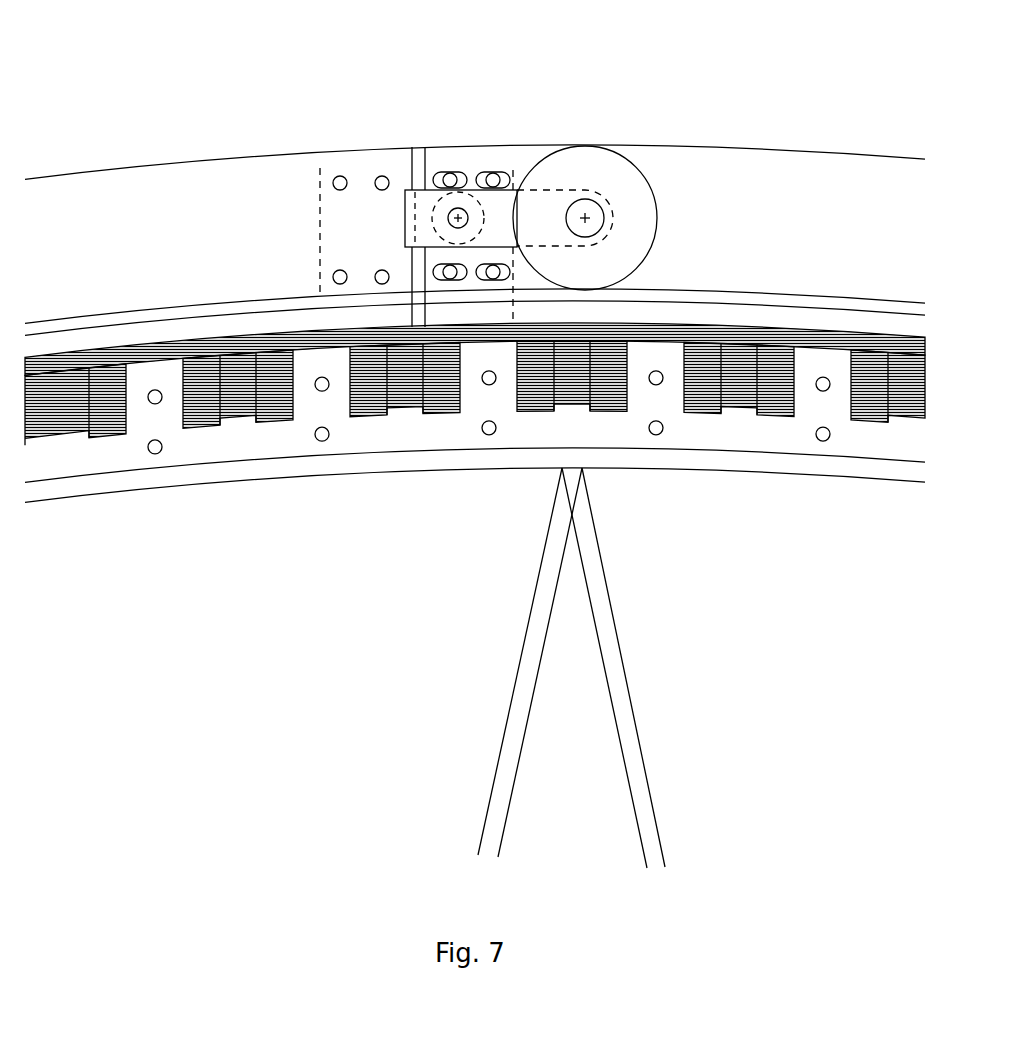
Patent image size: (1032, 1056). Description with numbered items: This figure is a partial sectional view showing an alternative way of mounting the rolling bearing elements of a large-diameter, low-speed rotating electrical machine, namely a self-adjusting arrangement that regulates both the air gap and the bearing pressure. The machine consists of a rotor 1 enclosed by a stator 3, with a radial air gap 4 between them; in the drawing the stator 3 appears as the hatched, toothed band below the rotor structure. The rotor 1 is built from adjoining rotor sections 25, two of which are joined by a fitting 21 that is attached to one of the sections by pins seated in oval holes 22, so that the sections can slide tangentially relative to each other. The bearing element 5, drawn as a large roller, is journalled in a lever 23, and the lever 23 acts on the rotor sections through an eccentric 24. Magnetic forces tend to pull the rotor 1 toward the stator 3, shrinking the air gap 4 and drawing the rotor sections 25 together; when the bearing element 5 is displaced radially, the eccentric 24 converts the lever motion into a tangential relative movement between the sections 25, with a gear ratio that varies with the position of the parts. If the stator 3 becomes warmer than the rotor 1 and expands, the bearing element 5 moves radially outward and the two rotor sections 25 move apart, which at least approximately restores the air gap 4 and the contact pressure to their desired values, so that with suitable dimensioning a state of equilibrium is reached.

The rotor 1 is at (381, 237).
The stator 3 is at (475, 397).
The radial air gap 4 is at (672, 457).
The bearing element 5 is at (607, 135).
The fitting 21 is at (310, 140).
The oval holes 22 is at (433, 161).
The lever 23 is at (498, 197).
The eccentric 24 is at (474, 194).
The rotor sections 25 is at (173, 184).